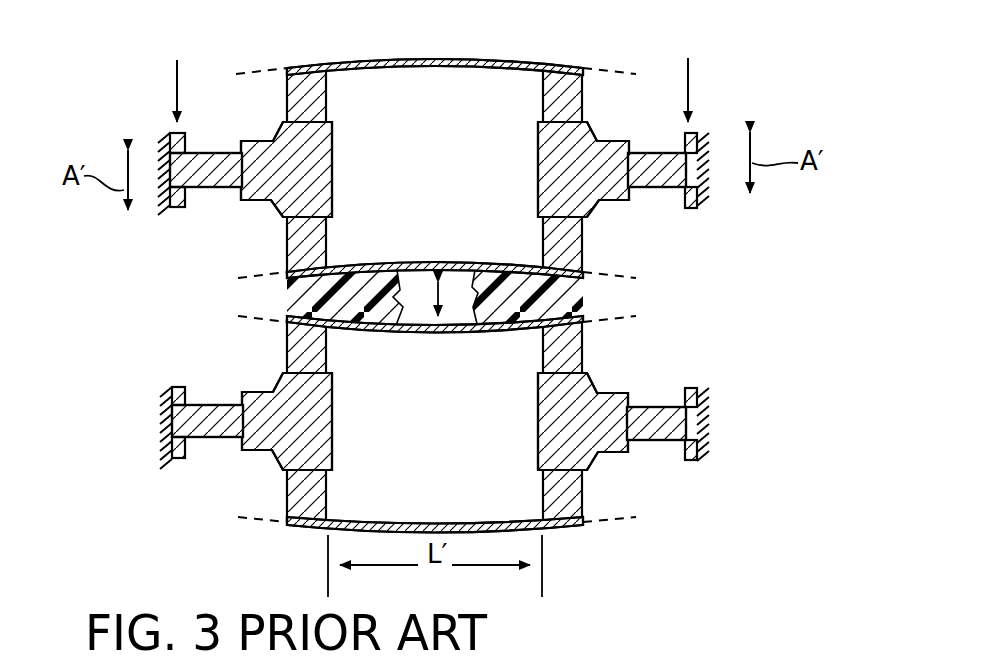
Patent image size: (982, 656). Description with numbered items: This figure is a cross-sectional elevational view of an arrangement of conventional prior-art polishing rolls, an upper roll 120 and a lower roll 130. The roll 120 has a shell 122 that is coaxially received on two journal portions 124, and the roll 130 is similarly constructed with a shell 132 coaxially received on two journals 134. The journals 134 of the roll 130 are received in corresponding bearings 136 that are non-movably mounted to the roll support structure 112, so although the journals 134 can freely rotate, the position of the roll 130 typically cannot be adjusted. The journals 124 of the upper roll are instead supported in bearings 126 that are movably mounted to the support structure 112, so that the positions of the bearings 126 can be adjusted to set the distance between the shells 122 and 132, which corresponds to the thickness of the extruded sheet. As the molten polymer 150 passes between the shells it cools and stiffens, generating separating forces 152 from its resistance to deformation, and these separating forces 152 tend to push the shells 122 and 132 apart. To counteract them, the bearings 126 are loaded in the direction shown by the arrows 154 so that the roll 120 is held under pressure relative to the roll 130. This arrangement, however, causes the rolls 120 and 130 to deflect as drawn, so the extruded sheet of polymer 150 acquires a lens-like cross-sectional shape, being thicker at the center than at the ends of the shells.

The roll support structure 112 is at (165, 140).
The roll 120 is at (603, 38).
The shell 122 is at (393, 62).
The journal portions 124 is at (268, 196).
The bearings 126 is at (178, 208).
The roll 130 is at (634, 493).
The shell 132 is at (477, 533).
The journals 134 is at (270, 392).
The bearings 136 is at (180, 459).
The molten polymer 150 is at (602, 293).
The separating forces 152 is at (450, 290).
The loading direction arrows 154 is at (178, 73).